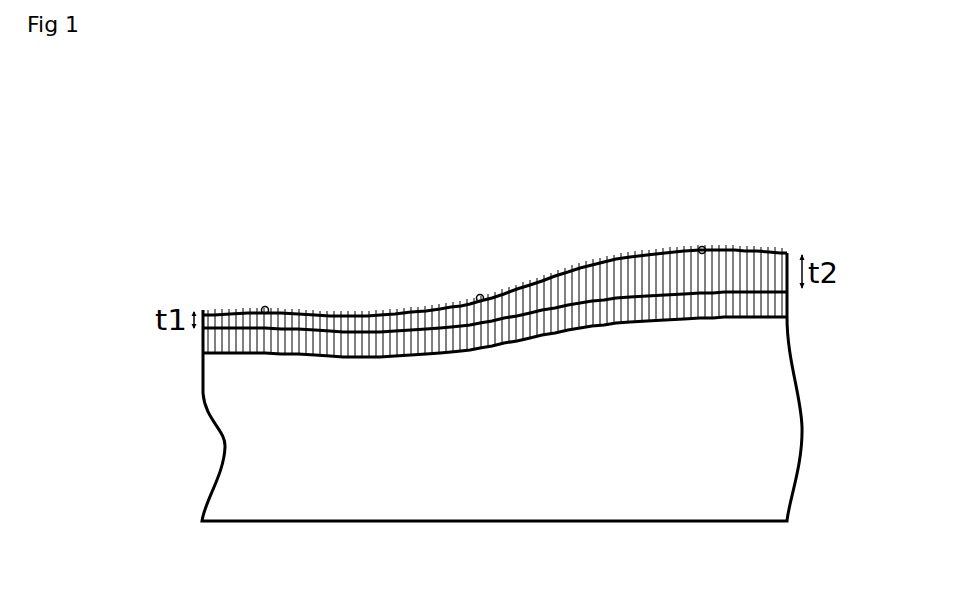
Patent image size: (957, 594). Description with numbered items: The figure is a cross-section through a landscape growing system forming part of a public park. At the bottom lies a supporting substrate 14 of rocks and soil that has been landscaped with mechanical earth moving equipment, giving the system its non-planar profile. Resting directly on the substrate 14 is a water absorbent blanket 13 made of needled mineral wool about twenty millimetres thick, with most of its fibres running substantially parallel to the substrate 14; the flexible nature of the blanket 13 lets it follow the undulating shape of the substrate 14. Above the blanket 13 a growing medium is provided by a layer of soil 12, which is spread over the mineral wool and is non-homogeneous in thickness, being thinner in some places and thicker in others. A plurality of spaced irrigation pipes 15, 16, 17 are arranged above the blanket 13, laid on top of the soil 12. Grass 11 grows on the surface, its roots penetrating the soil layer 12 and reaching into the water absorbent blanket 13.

The grass 11 is at (743, 250).
The soil layer 12 is at (223, 322).
The water absorbent blanket 13 is at (228, 343).
The supporting substrate 14 is at (260, 428).
The irrigation pipe 15 is at (263, 306).
The irrigation pipe 16 is at (478, 294).
The irrigation pipe 17 is at (700, 246).